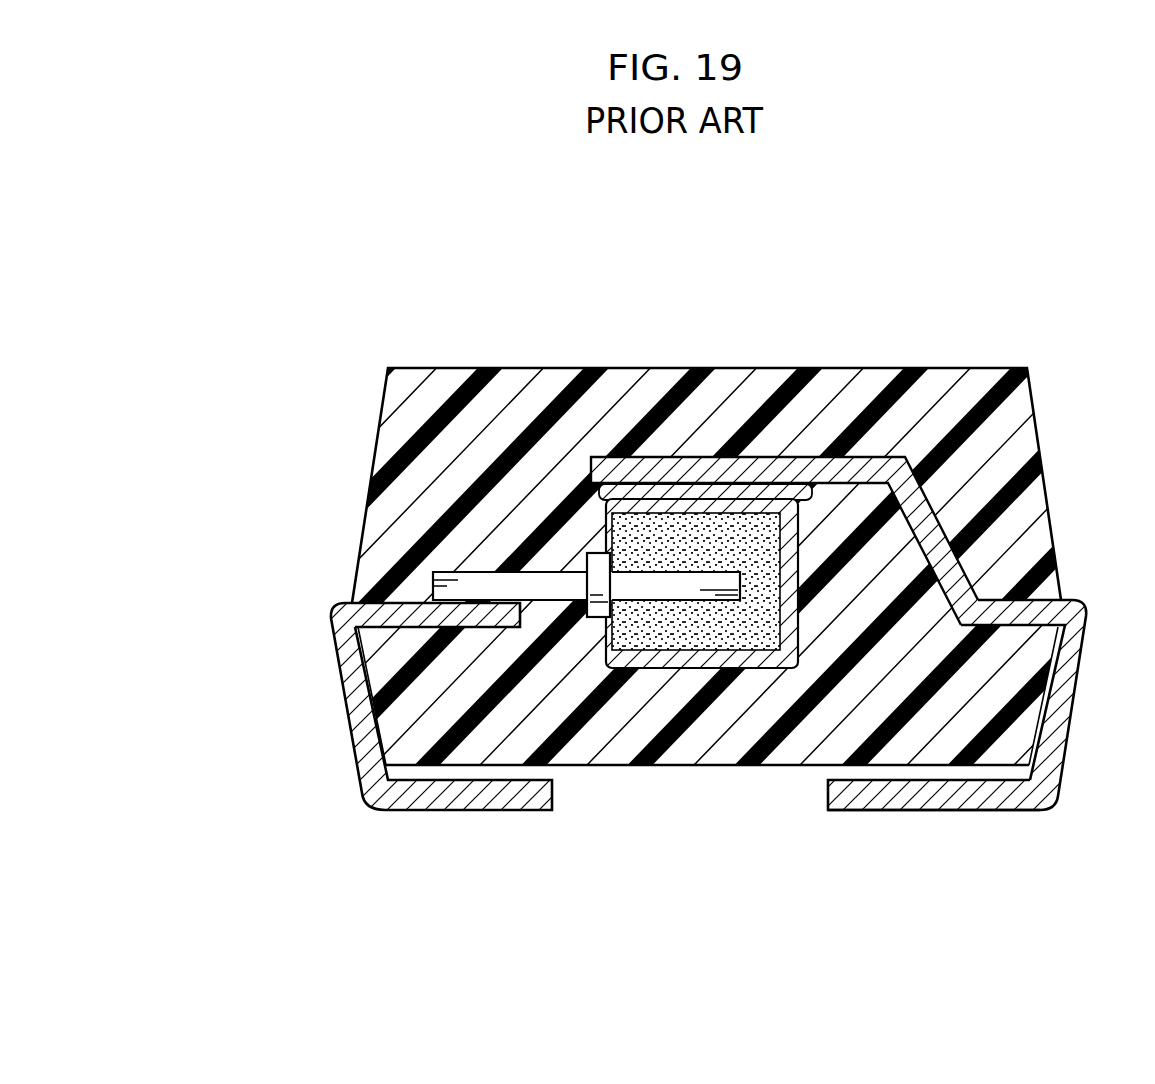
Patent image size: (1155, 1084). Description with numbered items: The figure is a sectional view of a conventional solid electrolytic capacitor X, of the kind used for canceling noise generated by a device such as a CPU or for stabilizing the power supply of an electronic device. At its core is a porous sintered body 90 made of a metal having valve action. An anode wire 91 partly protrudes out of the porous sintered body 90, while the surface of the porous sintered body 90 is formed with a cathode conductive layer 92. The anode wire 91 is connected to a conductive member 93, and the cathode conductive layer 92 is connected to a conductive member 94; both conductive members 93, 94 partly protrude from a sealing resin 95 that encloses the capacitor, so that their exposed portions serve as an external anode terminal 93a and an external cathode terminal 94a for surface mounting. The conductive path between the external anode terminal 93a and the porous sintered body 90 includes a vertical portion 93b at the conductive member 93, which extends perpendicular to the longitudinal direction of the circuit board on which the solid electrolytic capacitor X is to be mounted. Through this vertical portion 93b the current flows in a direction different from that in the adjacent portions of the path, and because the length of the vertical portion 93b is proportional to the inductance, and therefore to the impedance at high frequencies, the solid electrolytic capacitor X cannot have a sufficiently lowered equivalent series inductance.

The solid electrolytic capacitor X is at (404, 364).
The porous sintered body 90 is at (676, 642).
The anode wire 91 is at (476, 583).
The cathode conductive layer 92 is at (792, 562).
The conductive member 93 is at (399, 751).
The external anode terminal 93a is at (492, 800).
The vertical portion 93b is at (360, 706).
The conductive member 94 is at (989, 742).
The external cathode terminal 94a is at (930, 800).
The sealing resin 95 is at (1022, 383).